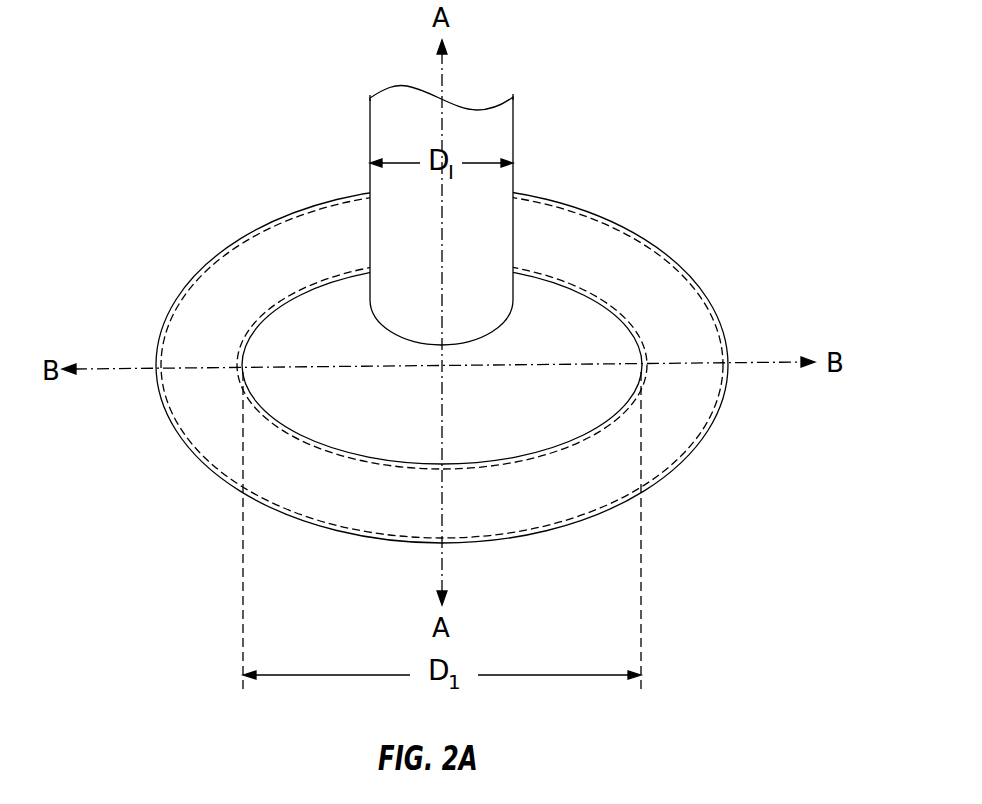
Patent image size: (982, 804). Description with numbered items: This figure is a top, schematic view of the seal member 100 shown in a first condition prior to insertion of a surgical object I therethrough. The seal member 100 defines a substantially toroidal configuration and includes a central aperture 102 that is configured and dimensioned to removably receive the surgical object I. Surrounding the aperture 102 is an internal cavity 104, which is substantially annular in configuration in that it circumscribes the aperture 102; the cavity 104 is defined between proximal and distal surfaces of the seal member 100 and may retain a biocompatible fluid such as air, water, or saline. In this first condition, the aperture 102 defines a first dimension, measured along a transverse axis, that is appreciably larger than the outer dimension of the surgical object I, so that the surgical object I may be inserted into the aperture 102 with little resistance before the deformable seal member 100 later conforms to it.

The seal member 100 is at (468, 362).
The aperture 102 is at (283, 307).
The internal cavity 104 is at (722, 198).
The surgical object I is at (514, 137).